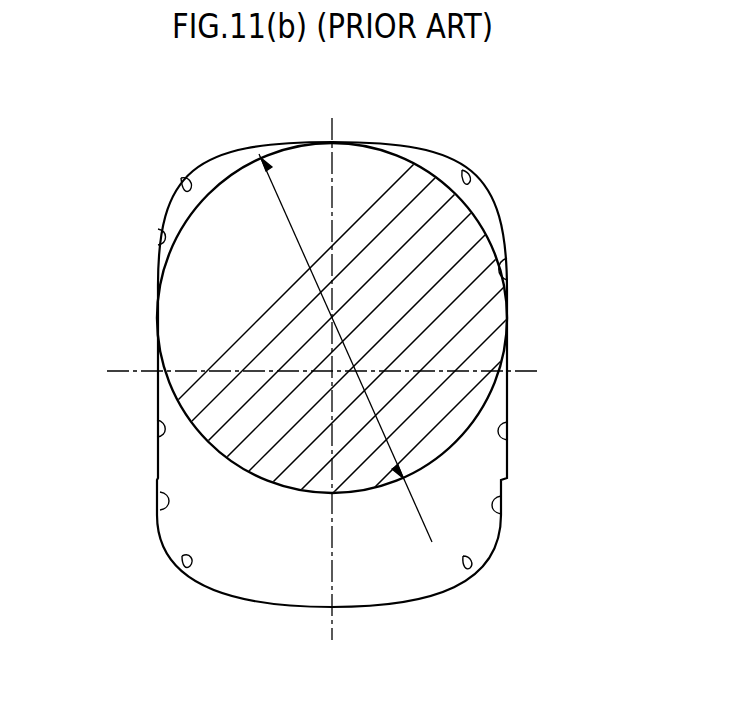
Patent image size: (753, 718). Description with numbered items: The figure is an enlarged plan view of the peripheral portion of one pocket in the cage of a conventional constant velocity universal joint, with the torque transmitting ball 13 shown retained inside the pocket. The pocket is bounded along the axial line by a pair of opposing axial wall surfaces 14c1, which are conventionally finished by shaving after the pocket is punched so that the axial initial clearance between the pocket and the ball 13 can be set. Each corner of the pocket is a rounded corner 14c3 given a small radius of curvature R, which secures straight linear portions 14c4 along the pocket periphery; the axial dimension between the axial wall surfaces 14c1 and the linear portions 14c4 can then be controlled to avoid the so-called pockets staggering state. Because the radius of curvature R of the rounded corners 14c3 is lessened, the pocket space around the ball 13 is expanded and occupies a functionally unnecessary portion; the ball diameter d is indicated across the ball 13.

The torque transmitting ball 13 is at (280, 493).
The axial wall surface 14c1 is at (157, 429).
The radius (rounded corner) 14c3 is at (186, 188).
The linear portion 14c4 is at (158, 236).
The radius of curvature R is at (490, 185).
The shaft diameter d is at (356, 348).